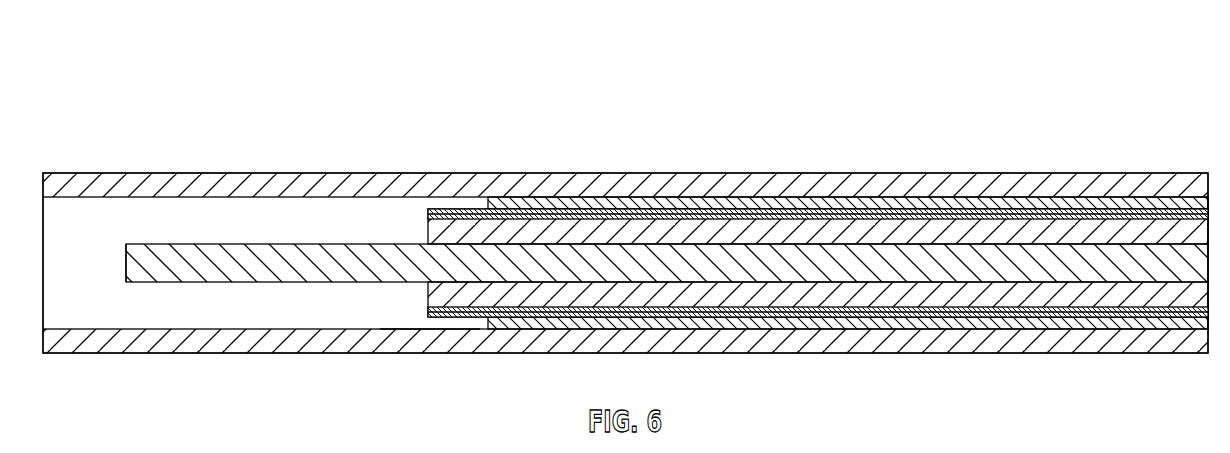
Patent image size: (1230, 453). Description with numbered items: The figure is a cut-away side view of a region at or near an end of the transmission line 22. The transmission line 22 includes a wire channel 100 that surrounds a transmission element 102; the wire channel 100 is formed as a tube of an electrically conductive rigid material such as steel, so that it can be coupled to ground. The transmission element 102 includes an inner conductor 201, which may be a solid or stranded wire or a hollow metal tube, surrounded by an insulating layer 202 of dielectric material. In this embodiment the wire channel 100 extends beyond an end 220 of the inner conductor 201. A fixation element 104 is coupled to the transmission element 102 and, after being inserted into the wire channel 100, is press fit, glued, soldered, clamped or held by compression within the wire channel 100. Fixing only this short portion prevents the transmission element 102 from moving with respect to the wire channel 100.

The transmission line 22 is at (309, 46).
The wire channel 100 is at (147, 188).
The transmission element 102 is at (436, 336).
The fixation element 104 is at (877, 205).
The inner conductor 201 is at (310, 262).
The insulating layer 202 is at (465, 230).
The end of the communication element 220 is at (126, 263).